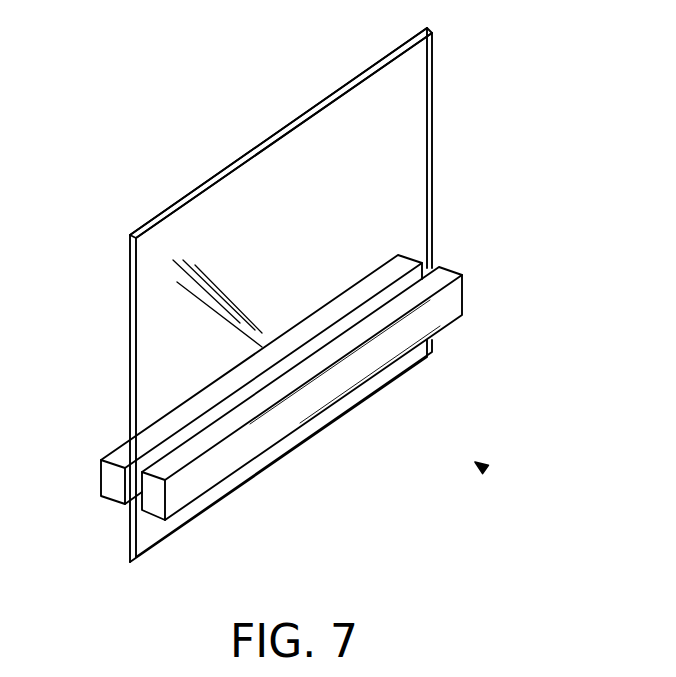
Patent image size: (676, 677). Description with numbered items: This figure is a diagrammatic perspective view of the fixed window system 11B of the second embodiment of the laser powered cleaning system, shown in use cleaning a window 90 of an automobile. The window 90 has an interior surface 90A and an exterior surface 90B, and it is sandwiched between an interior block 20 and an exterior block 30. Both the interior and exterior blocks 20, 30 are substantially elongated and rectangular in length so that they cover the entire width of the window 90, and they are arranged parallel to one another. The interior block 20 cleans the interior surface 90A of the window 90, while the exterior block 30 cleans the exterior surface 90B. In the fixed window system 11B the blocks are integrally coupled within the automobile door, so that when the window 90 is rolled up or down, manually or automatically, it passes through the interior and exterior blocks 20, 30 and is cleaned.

The window 90 is at (323, 295).
The interior surface 90A is at (320, 227).
The exterior surface 90B is at (272, 137).
The interior block 20 is at (443, 307).
The exterior block 30 is at (108, 477).
The fixed window system 11B is at (483, 468).